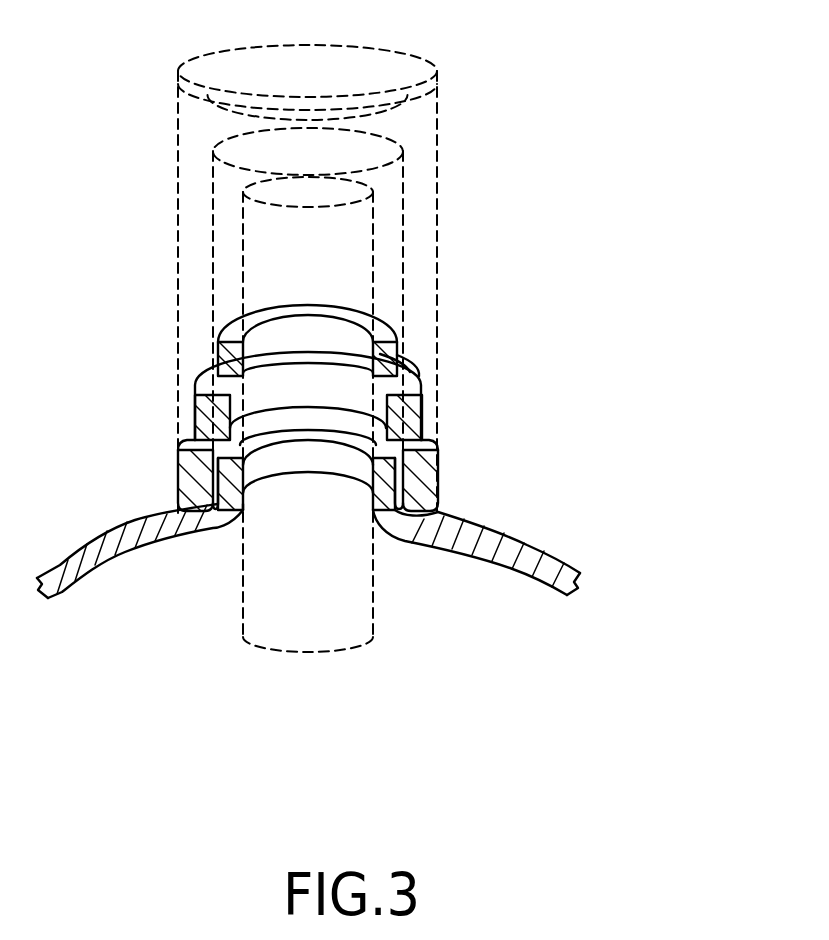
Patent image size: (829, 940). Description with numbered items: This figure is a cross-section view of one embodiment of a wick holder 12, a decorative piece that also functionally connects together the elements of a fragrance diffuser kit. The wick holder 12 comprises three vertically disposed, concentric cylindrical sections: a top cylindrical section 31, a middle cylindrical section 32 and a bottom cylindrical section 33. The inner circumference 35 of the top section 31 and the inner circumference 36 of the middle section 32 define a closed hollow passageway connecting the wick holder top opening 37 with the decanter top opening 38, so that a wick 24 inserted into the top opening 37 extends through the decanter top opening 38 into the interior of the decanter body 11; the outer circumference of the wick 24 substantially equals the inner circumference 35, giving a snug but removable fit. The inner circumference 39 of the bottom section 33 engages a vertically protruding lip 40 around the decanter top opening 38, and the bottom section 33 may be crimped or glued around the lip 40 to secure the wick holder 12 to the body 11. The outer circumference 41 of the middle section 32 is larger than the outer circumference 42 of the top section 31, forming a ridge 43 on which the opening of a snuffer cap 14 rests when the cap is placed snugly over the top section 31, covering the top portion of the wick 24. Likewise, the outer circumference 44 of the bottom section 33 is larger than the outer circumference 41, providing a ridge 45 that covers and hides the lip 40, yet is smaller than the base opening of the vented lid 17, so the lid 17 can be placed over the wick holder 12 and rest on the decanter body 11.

The decanter body 11 is at (557, 553).
The wick holder 12 is at (290, 264).
The snuffer cap 14 is at (402, 165).
The vented lid 17 is at (397, 55).
The wick 24 is at (370, 203).
The top cylindrical section 31 is at (400, 298).
The middle cylindrical section 32 is at (460, 415).
The bottom cylindrical section 33 is at (478, 478).
The inner circumference of top section 35 is at (243, 350).
The inner circumference of middle section 36 is at (273, 385).
The wick holder top opening 37 is at (308, 314).
The decanter top opening 38 is at (313, 510).
The inner circumference of bottom section 39 is at (200, 480).
The protruding lip 40 is at (233, 498).
The outer circumference of middle section 41 is at (410, 378).
The outer circumference of top section 42 is at (400, 348).
The ridge 43 is at (418, 358).
The outer circumference of bottom section 44 is at (438, 455).
The ridge 45 is at (443, 445).